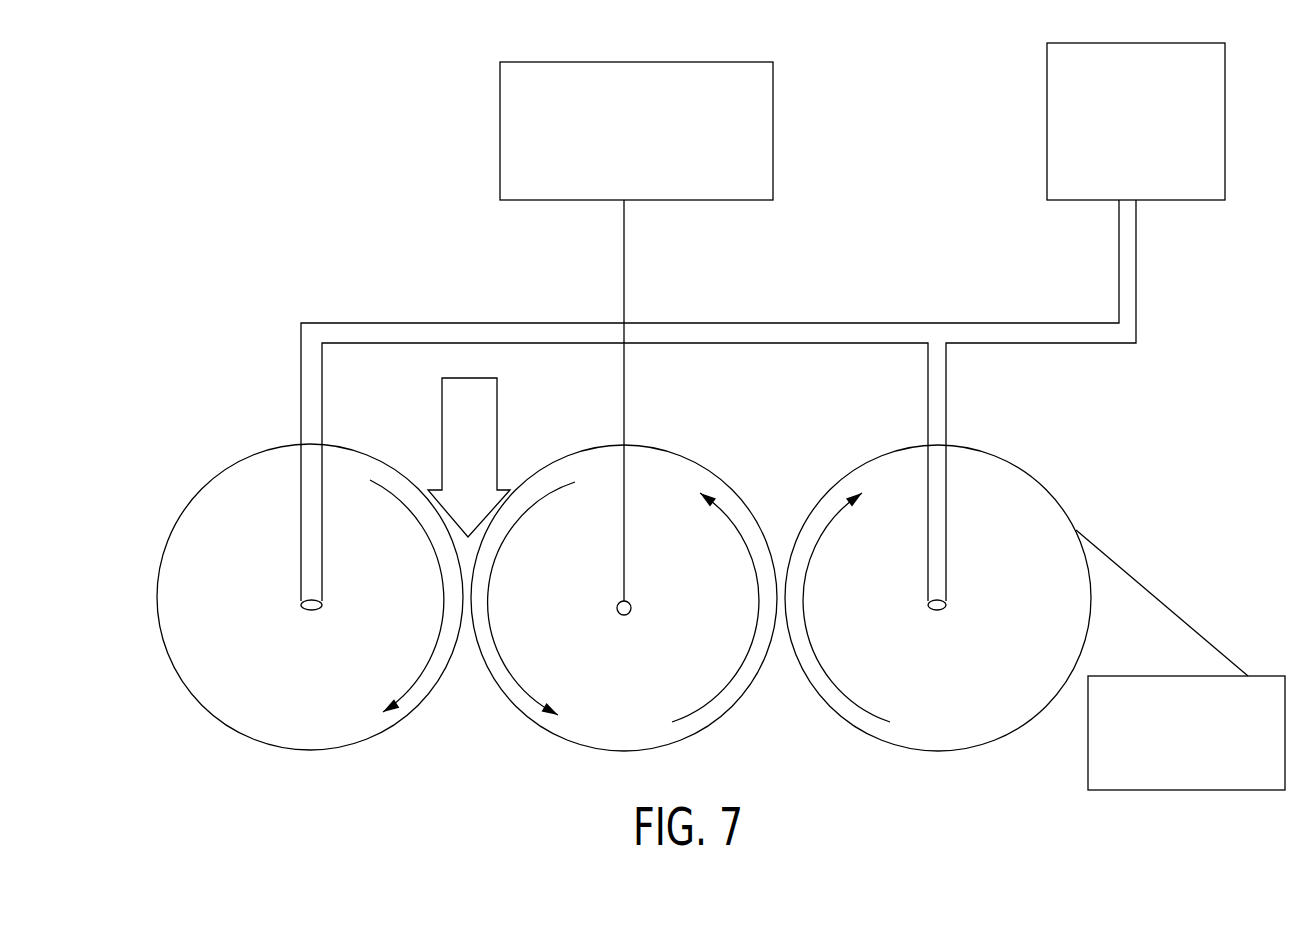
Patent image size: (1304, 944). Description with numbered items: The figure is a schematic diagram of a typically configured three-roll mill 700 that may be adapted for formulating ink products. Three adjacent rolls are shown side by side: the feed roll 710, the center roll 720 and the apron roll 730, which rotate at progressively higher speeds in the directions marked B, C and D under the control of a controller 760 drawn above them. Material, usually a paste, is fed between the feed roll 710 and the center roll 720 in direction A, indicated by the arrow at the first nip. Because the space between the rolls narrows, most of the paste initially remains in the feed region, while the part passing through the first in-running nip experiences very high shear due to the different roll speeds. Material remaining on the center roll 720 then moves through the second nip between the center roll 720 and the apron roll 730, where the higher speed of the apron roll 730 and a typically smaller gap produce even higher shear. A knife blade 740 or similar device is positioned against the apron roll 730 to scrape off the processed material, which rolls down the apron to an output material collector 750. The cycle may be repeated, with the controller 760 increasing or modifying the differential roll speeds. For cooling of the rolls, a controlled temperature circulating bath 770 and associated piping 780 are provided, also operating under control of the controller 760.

The 3-roll mill 700 is at (284, 130).
The feed roll 710 is at (240, 461).
The center roll 720 is at (500, 690).
The apron roll 730 is at (828, 702).
The knife blade 740 is at (1142, 582).
The output material collector 750 is at (1268, 676).
The controller 760 is at (500, 115).
The controlled temperature circulating bath 770 is at (1047, 118).
The piping 780 is at (1012, 323).